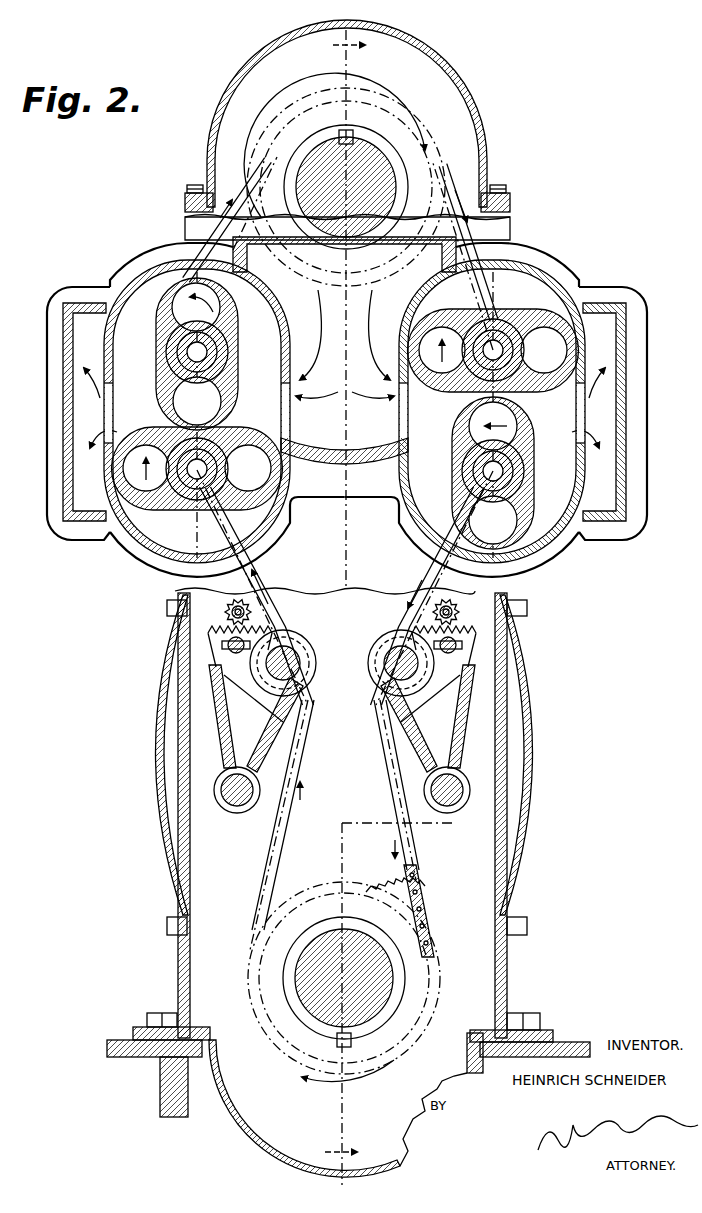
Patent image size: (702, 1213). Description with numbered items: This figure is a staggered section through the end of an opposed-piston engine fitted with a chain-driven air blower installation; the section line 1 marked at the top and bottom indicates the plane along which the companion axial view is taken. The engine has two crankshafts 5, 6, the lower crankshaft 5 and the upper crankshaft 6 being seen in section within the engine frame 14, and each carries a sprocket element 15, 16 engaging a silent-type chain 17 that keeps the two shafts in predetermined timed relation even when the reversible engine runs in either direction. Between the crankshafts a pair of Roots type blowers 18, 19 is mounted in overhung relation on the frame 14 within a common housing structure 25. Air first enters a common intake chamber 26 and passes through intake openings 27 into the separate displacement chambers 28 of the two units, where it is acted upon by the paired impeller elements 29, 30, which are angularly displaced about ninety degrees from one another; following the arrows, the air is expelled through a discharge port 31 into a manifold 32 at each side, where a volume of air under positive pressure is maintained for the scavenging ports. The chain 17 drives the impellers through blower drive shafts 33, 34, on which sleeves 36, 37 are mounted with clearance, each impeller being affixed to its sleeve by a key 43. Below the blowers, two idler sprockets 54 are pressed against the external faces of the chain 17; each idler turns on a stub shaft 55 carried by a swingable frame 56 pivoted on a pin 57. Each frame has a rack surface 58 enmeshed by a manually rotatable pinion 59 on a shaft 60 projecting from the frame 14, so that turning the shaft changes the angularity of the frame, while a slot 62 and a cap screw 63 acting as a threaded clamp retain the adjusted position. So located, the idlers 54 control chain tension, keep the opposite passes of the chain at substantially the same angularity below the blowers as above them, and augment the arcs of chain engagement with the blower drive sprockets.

The section line 1— 1 is at (335, 598).
The crankshaft 5 is at (370, 985).
The crankshaft 6 is at (335, 178).
The engine frame 14 is at (505, 214).
The sprocket element 15 is at (295, 1037).
The sprocket element 16 is at (375, 130).
The chain 17 is at (248, 198).
The blower 18 is at (115, 292).
The blower 19 is at (578, 303).
The housing structure 25 is at (165, 265).
The intake chamber 26 is at (415, 232).
The intake opening 27 is at (288, 405).
The displacement chamber 28 is at (100, 342).
The impeller element 29 is at (228, 300).
The impeller element 30 is at (215, 508).
The discharge port 31 is at (118, 400).
The manifold 32 is at (88, 480).
The blower drive shaft 33 is at (220, 354).
The blower drive shaft 34 is at (222, 470).
The sleeve 36 is at (228, 385).
The sleeve 37 is at (185, 495).
The key 43 is at (175, 343).
The idler sprocket 54 is at (385, 700).
The stub shaft 55 is at (298, 648).
The swingable frame 56 is at (398, 745).
The pin 57 is at (222, 812).
The rack surface 58 is at (485, 633).
The pinion 59 is at (250, 620).
The shaft 60 is at (228, 612).
The slot 62 is at (470, 648).
The cap screw 63 is at (222, 645).